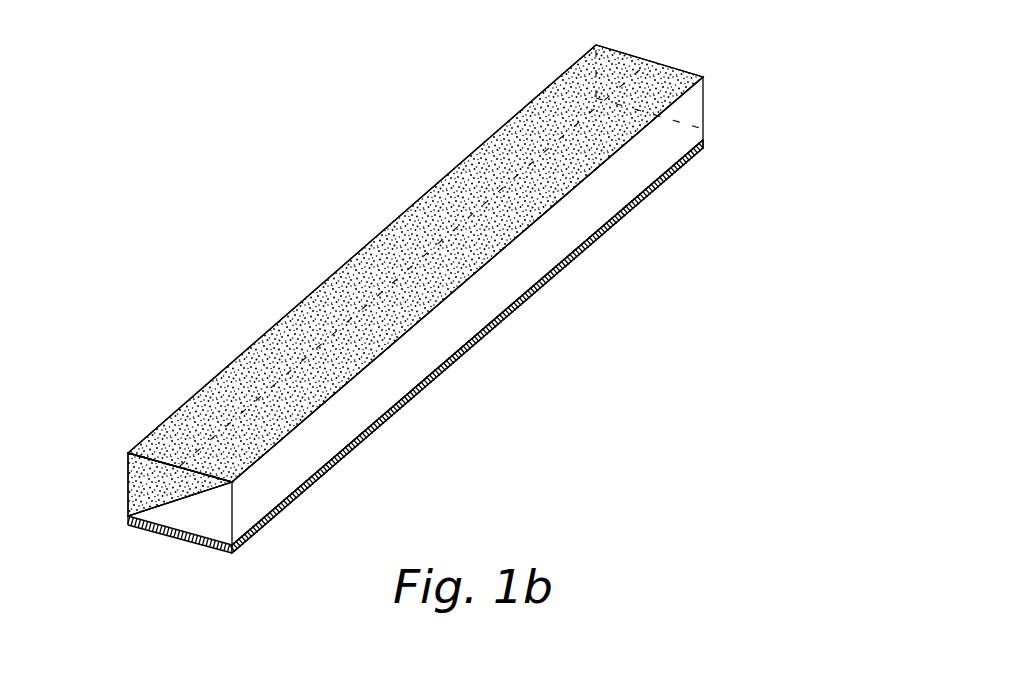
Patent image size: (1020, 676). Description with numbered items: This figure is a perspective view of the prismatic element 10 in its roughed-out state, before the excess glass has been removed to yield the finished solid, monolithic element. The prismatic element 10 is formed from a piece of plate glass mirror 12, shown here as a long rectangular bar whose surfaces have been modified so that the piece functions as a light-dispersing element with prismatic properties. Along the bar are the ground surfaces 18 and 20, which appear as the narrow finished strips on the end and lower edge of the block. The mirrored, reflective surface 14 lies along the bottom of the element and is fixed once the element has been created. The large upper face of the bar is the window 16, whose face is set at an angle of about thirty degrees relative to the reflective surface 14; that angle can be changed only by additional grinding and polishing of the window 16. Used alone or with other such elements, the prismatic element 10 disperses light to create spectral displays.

The prismatic element 10 is at (432, 392).
The plate glass mirror 12 is at (126, 489).
The reflective surface 14 is at (142, 528).
The window 16 is at (423, 290).
The ground surface 18 is at (207, 530).
The ground surface 20 is at (533, 273).